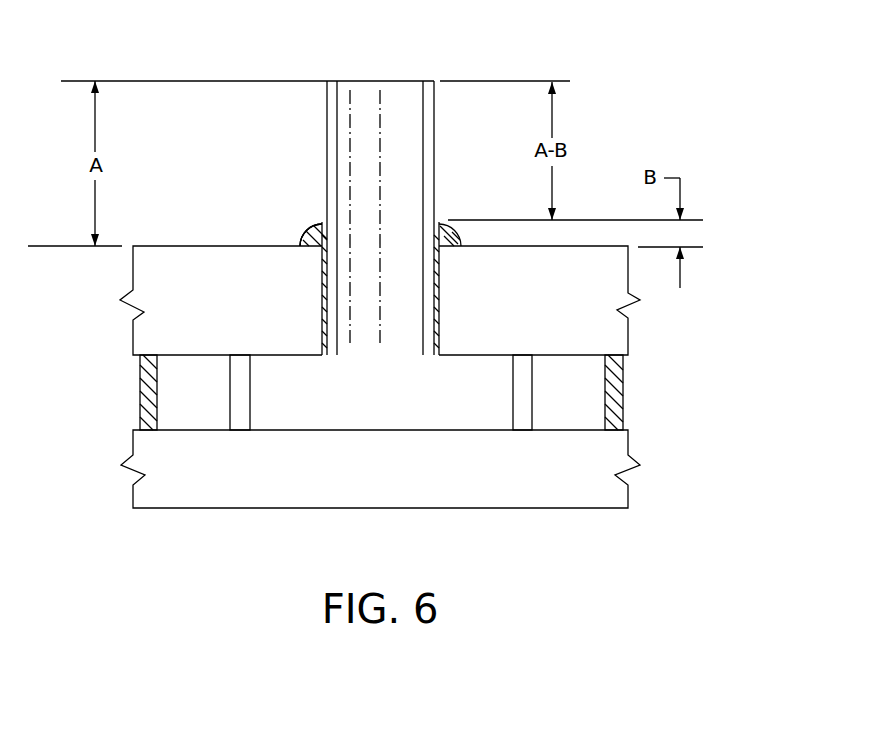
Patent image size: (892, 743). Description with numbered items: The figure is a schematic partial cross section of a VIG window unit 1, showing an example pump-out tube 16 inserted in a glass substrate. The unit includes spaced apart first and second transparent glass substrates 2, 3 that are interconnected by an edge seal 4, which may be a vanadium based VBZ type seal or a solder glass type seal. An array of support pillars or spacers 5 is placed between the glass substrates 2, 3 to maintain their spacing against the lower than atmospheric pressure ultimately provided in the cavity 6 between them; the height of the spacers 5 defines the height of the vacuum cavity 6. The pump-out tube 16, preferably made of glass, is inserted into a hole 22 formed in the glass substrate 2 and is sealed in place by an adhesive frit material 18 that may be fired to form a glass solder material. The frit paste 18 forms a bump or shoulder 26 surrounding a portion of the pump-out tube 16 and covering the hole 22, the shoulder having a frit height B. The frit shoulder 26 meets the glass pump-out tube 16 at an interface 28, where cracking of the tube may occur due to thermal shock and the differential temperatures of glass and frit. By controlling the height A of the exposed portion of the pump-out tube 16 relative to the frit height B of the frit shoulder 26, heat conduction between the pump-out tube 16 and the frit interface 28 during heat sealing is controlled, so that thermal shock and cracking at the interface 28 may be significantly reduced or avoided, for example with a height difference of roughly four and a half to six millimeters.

The VIG window unit 1 is at (678, 72).
The first transparent glass substrate 2 is at (600, 330).
The second transparent glass substrate 3 is at (583, 493).
The edge seal 4 is at (140, 392).
The support pillars/spacers 5 is at (238, 402).
The cavity 6 is at (310, 405).
The pump-out tube 16 is at (395, 93).
The adhesive frit material 18 is at (437, 223).
The hole 22 is at (322, 363).
The frit shoulder 26 is at (308, 233).
The interface 28 is at (327, 222).